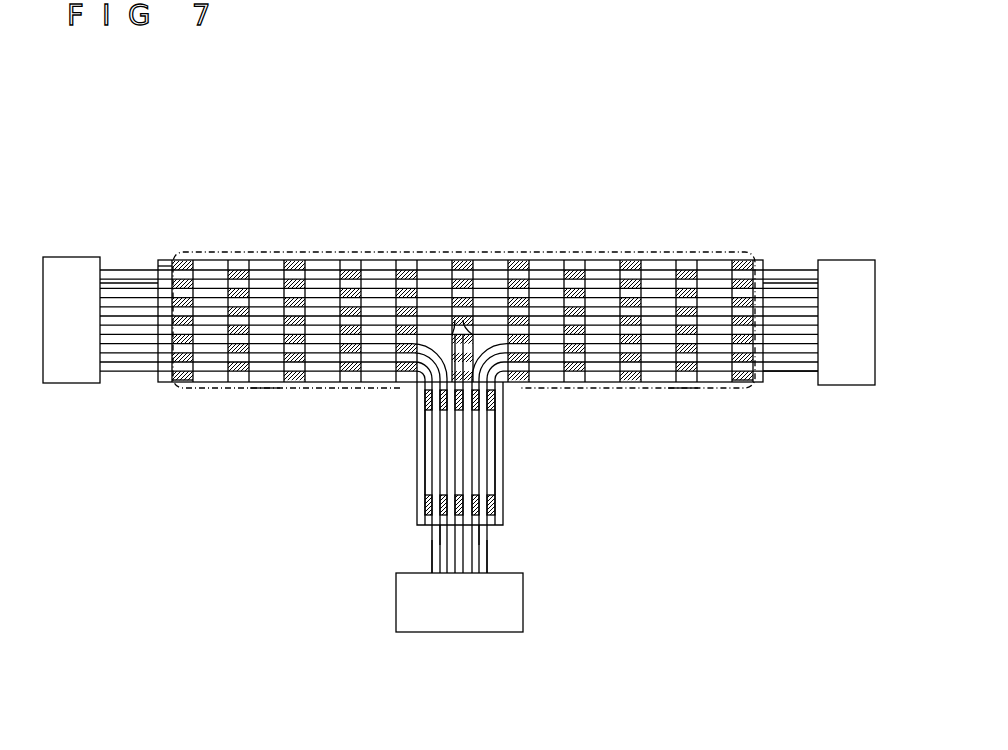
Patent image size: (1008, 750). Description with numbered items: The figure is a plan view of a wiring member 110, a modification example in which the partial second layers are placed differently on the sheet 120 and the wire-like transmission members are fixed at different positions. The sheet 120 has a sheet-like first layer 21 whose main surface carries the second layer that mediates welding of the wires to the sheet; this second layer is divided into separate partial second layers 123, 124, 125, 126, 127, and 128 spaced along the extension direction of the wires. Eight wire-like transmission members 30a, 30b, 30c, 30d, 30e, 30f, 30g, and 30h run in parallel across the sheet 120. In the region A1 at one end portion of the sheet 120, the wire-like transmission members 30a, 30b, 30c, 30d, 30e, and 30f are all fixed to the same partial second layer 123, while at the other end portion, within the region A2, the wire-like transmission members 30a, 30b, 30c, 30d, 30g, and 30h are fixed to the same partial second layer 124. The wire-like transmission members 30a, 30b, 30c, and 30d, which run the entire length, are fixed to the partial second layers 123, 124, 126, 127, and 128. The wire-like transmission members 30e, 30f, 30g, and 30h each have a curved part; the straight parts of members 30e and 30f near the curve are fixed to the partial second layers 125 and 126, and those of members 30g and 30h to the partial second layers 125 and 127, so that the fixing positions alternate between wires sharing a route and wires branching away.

The wiring member 110 is at (125, 143).
The partial second layer 128 is at (628, 262).
The partial second layer 126 is at (415, 262).
The partial second layer 127 is at (505, 262).
The sheet 120 is at (330, 388).
The first layer 21 is at (505, 456).
The partial second layer 125 is at (510, 405).
The partial second layer 123 is at (187, 388).
The partial second layer 124 is at (760, 388).
The wire-like transmission member 30a is at (160, 270).
The wire-like transmission member 30b is at (125, 283).
The wire-like transmission member 30c is at (790, 282).
The wire-like transmission member 30d is at (793, 370).
The wire-like transmission member 30e is at (430, 562).
The wire-like transmission member 30f is at (432, 540).
The wire-like transmission member 30g is at (492, 563).
The wire-like transmission member 30h is at (492, 536).
The region A1 is at (263, 391).
The second region A2 is at (683, 391).